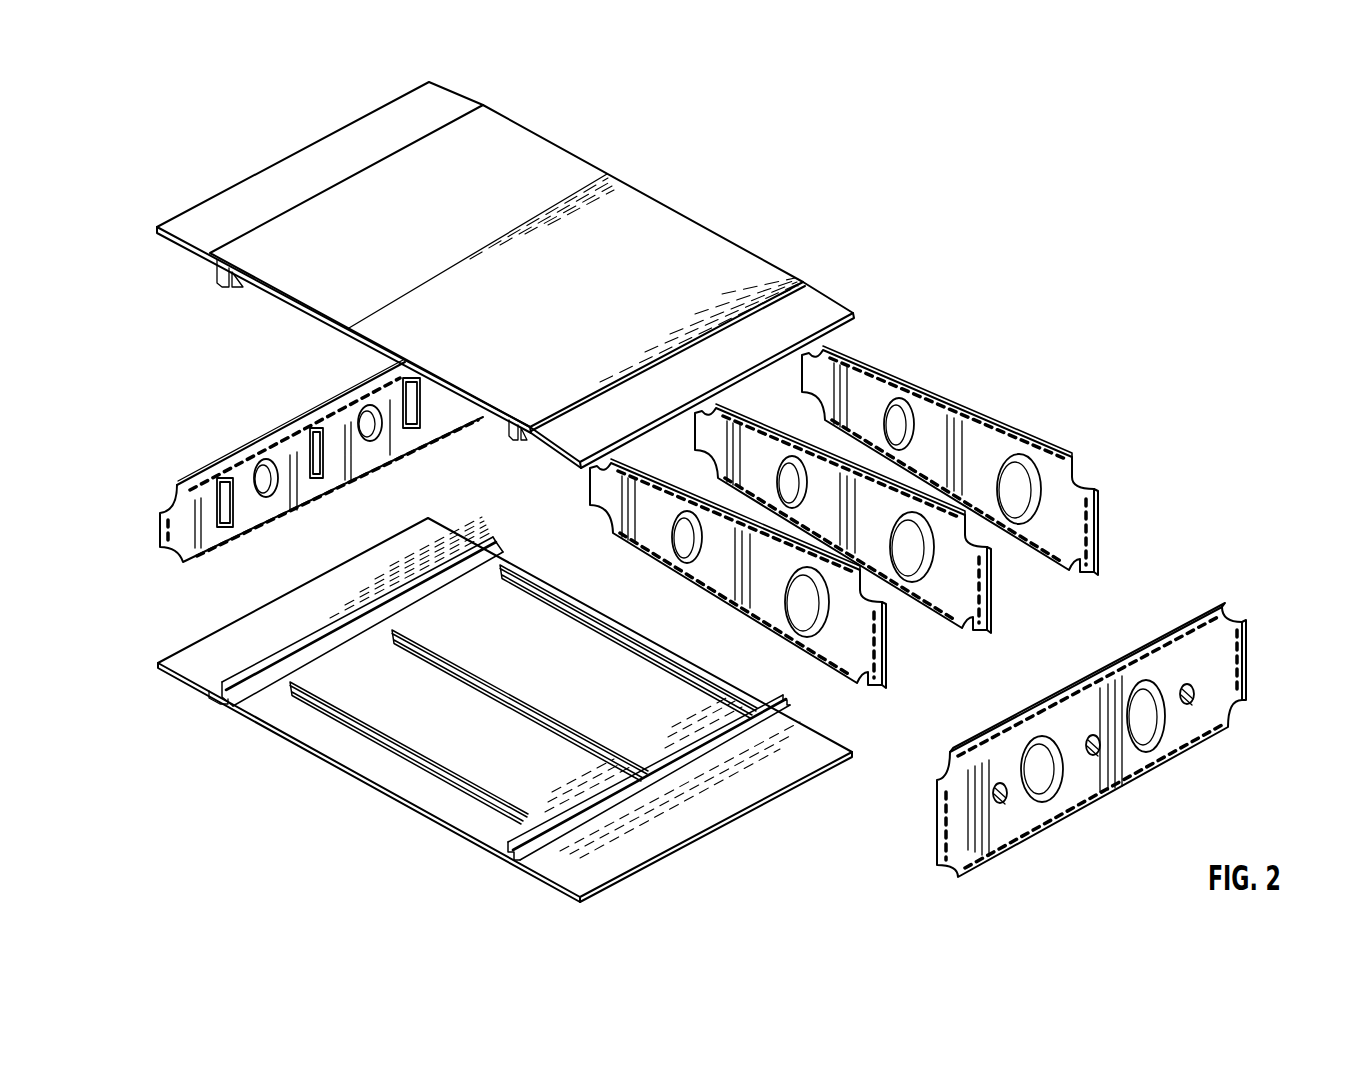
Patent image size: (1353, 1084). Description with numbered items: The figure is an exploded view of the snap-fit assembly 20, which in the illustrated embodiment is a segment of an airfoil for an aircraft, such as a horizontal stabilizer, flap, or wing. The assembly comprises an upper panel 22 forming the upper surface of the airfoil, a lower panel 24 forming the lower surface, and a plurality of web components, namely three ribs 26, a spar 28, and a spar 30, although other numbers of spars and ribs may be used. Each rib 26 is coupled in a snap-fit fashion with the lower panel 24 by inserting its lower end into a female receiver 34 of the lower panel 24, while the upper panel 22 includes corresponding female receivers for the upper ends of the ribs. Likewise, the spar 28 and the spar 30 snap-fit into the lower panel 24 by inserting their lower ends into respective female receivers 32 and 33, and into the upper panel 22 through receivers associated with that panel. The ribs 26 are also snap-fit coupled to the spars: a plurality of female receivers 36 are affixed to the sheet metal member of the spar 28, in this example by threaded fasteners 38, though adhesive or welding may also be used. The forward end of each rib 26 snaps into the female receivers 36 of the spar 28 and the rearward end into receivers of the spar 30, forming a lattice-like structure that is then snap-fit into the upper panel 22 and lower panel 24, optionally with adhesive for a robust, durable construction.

The snap-fit assembly 20 is at (1030, 248).
The upper panel 22 is at (643, 192).
The lower panel 24 is at (340, 775).
The rib 26 is at (1112, 532).
The spar 28 is at (268, 410).
The spar 30 is at (1217, 764).
The female receiver 32 is at (262, 662).
The female receiver 33 is at (703, 735).
The female receiver 34 is at (540, 598).
The female receiver 36 is at (443, 420).
The threaded fastener 38 is at (998, 784).